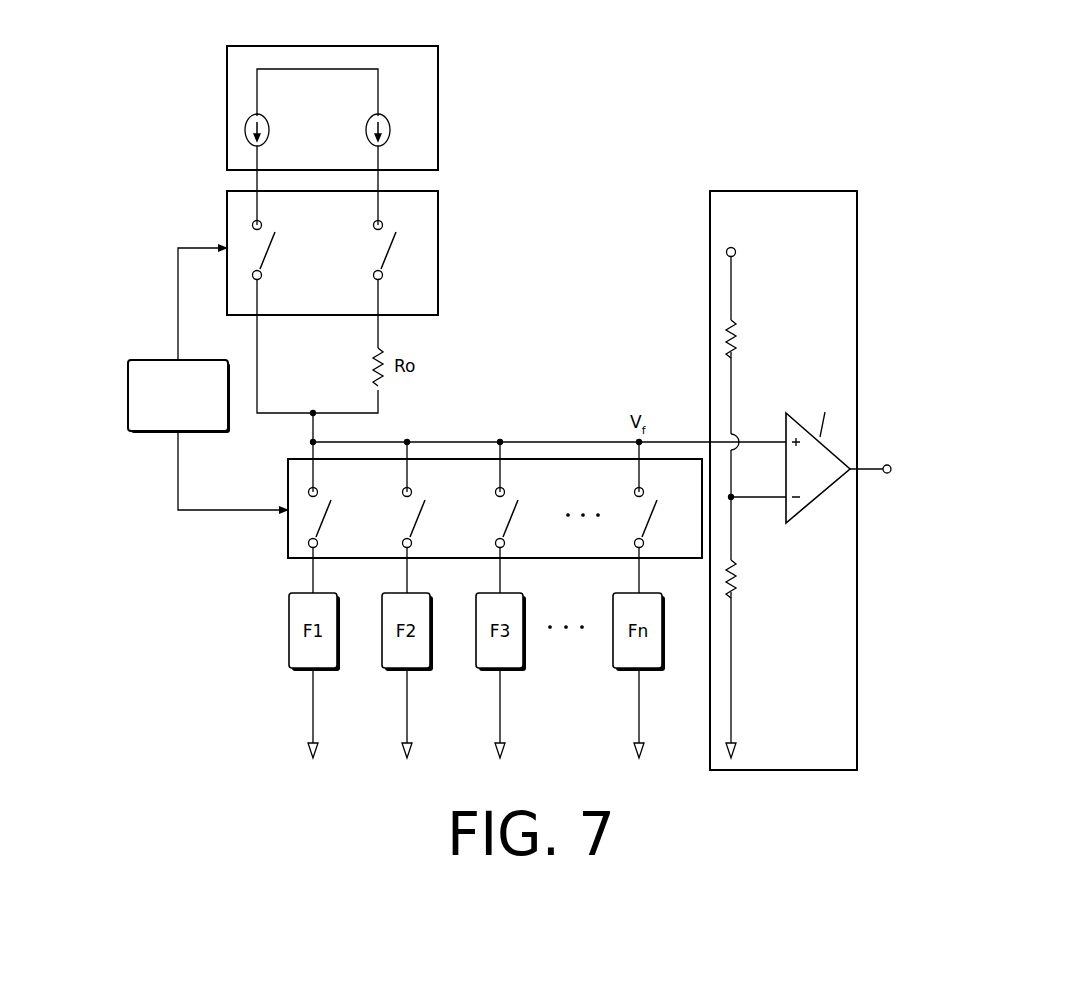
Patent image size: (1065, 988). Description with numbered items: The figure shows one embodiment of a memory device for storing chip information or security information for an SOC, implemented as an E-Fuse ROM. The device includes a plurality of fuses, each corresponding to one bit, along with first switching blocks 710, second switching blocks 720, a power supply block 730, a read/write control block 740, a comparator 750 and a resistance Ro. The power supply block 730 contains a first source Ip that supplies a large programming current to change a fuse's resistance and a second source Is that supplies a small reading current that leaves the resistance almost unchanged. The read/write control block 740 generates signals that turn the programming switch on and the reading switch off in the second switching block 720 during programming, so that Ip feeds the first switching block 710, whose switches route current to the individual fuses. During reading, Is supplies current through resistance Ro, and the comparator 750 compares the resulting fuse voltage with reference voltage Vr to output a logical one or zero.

The first switching block 710 is at (288, 541).
The second switching block 720 is at (438, 251).
The power supply block 730 is at (438, 97).
The read/write control block 740 is at (152, 358).
The comparator 750 is at (758, 189).